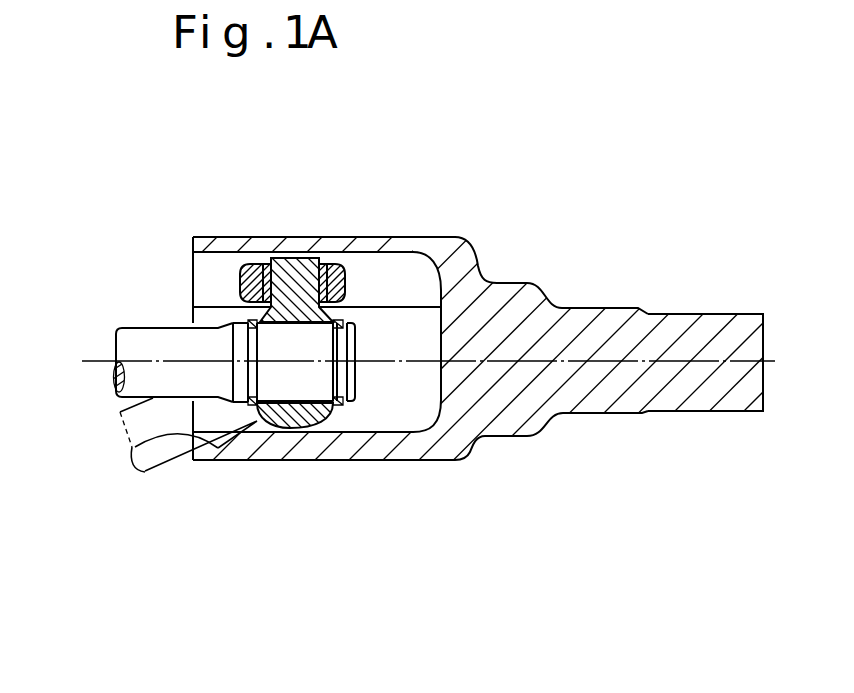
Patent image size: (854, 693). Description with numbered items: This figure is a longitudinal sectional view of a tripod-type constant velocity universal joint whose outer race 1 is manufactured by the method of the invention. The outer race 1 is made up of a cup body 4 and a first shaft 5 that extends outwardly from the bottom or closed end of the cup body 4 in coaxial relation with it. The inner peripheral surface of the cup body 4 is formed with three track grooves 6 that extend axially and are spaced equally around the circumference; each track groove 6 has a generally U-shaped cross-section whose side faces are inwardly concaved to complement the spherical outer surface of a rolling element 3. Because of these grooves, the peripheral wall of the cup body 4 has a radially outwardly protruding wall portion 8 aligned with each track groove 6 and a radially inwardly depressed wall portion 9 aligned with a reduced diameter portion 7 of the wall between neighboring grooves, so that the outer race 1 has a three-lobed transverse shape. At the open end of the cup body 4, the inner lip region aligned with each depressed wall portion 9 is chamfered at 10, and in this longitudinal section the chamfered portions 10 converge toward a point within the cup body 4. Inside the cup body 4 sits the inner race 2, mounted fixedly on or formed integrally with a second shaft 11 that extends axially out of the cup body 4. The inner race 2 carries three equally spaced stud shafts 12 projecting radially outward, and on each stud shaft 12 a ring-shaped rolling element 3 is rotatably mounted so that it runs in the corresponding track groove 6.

The outer race 1 is at (512, 447).
The inner race 2 is at (260, 417).
The rolling element 3 is at (247, 270).
The cup body 4 is at (378, 245).
The first shaft 5 is at (678, 331).
The track groove 6 is at (208, 273).
The reduced diameter portion 7 is at (362, 430).
The radially outwardly protruding wall portion 8 is at (340, 240).
The radially inwardly depressed wall portion 9 is at (300, 462).
The chamfered portion 10 is at (133, 453).
The second shaft 11 is at (152, 416).
The stud shaft 12 is at (285, 268).